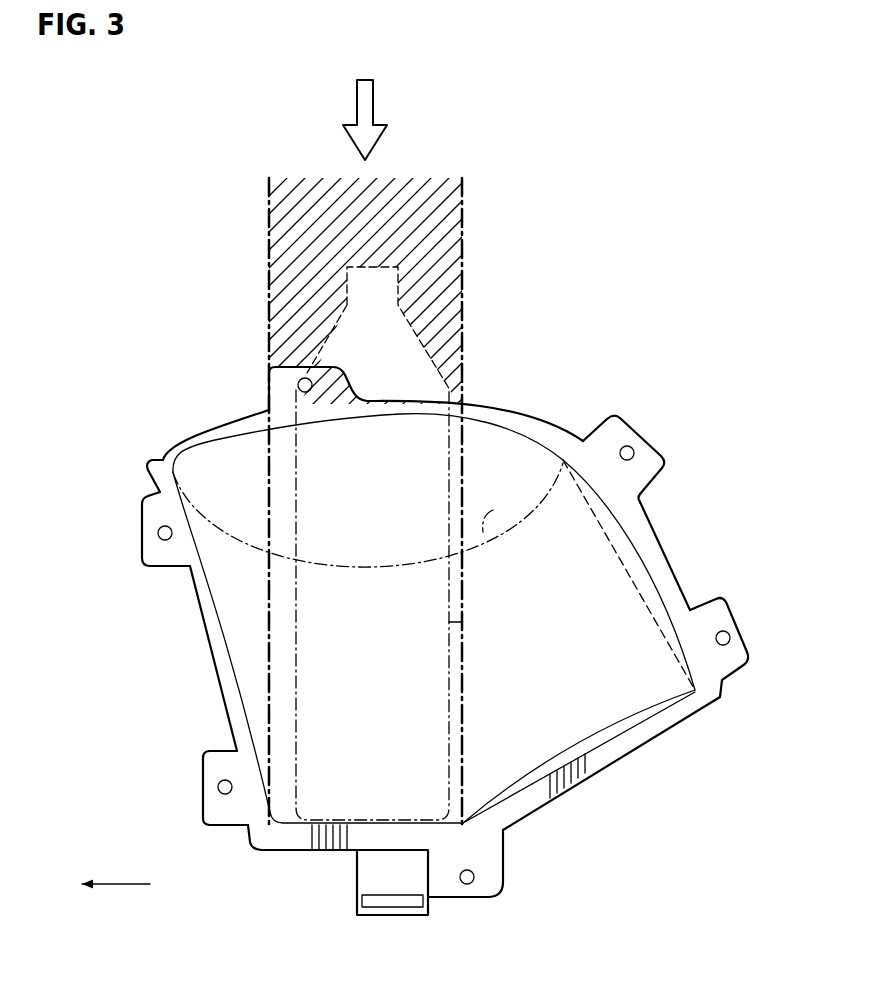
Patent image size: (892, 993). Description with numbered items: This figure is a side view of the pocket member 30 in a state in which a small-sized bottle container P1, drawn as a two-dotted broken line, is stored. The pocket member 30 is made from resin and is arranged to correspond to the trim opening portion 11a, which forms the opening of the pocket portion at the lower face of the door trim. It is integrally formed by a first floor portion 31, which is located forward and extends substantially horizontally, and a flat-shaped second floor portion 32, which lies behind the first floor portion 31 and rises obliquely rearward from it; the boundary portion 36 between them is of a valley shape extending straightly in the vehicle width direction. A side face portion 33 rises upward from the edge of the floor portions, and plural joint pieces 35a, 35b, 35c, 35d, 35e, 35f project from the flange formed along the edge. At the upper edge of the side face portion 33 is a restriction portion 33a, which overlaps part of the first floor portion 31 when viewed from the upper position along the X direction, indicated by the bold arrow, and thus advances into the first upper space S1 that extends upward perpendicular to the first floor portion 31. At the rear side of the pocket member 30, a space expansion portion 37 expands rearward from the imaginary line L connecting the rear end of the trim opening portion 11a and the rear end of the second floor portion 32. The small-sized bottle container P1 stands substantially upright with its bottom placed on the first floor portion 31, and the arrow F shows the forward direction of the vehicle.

The pocket member 30 is at (628, 775).
The first floor portion 31 is at (400, 820).
The second floor portion 32 is at (602, 733).
The side face portion 33 is at (505, 470).
The restriction portion 33a is at (417, 413).
The joint piece 35a is at (290, 382).
The joint piece 35b is at (153, 560).
The joint piece 35c is at (650, 452).
The joint piece 35d is at (208, 798).
The joint piece 35e is at (728, 615).
The joint piece 35f is at (498, 873).
The boundary portion 36 is at (445, 828).
The space expansion portion 37 is at (627, 537).
The trim opening portion 11a is at (500, 520).
The imaginary line L is at (673, 567).
The small-sized bottle container P1 is at (462, 622).
The first upper space S1 is at (379, 226).
The X direction X is at (365, 105).
The arrow F is at (102, 889).